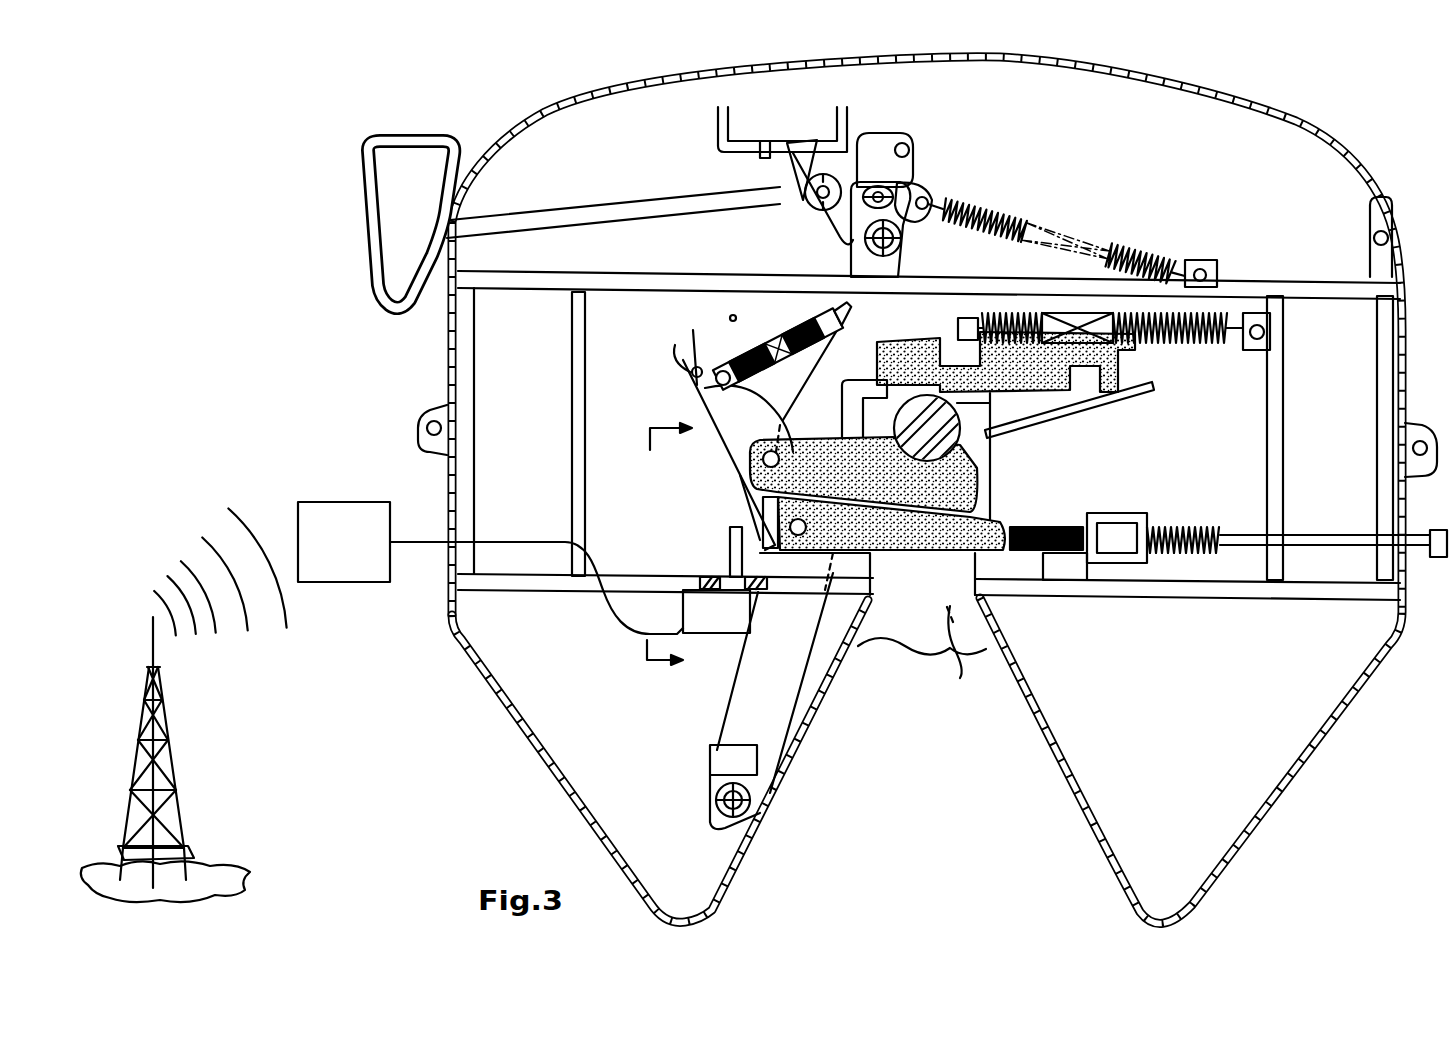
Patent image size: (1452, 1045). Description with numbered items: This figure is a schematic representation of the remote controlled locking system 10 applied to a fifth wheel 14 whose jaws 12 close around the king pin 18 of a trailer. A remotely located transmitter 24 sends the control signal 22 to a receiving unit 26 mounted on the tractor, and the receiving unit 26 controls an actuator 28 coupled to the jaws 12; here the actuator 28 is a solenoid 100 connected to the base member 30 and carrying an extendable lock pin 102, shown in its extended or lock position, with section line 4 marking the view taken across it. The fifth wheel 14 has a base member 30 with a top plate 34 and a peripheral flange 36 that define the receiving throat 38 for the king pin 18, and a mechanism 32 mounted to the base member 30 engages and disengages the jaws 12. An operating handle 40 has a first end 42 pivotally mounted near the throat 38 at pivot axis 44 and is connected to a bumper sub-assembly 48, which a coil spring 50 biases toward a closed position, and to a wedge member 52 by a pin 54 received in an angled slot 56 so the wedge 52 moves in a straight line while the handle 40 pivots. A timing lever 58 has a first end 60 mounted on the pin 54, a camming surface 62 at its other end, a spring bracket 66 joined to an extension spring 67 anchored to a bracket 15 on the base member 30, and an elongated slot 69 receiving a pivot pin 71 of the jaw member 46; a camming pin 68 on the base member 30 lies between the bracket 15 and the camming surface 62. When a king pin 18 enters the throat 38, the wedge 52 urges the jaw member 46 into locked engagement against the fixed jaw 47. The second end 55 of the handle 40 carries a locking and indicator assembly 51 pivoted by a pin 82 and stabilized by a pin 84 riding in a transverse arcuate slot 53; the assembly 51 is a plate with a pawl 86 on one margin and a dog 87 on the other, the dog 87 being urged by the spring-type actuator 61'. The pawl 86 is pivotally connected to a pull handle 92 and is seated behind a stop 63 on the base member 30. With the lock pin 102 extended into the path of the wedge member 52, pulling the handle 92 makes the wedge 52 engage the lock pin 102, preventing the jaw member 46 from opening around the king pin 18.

The remote controlled locking system 10 is at (731, 51).
The jaws 12 is at (1012, 478).
The fifth wheel 14 is at (1152, 73).
The bracket 15 is at (830, 300).
The king pin 18 is at (947, 437).
The control signal 22 is at (183, 528).
The transmitter 24 is at (178, 800).
The receiving unit 26 is at (336, 502).
The actuator 28 is at (719, 653).
The base member 30 is at (668, 83).
The mechanism 32 is at (935, 120).
The top plate 34 is at (1200, 125).
The peripheral flange 36 is at (760, 847).
The receiving throat 38 is at (960, 680).
The operating handle 40 is at (770, 695).
The first end 42 is at (757, 782).
The pivot axis 44 is at (710, 813).
The jaw member 46 is at (977, 500).
The fixed jaw 47 is at (1035, 425).
The bumper sub-assembly 48 is at (1156, 366).
The coil spring 50 is at (1225, 320).
The locking and indicator assembly 51 is at (875, 150).
The wedge member 52 is at (995, 592).
The transverse arcuate slot 53 is at (910, 183).
The pin 54 is at (790, 528).
The second end 55 is at (933, 187).
The slot 56 is at (760, 503).
The timing lever 58 is at (733, 407).
The first end 60 is at (768, 510).
The actuator 61' is at (1079, 242).
The camming surface 62 is at (692, 347).
The stop 63 is at (762, 140).
The spring bracket 66 is at (703, 387).
The extension spring 67 is at (795, 332).
The camming pin 68 is at (729, 317).
The elongated slot 69 is at (757, 458).
The pivot pin 71 is at (763, 461).
The pin 82 is at (900, 246).
The stabilizing pin 84 is at (845, 230).
The pawl 86 is at (795, 180).
The dog 87 is at (927, 183).
The pull handle 92 is at (400, 140).
The solenoid 100 is at (713, 617).
The lock pin 102 is at (730, 548).
The section line 4- 4 is at (677, 546).